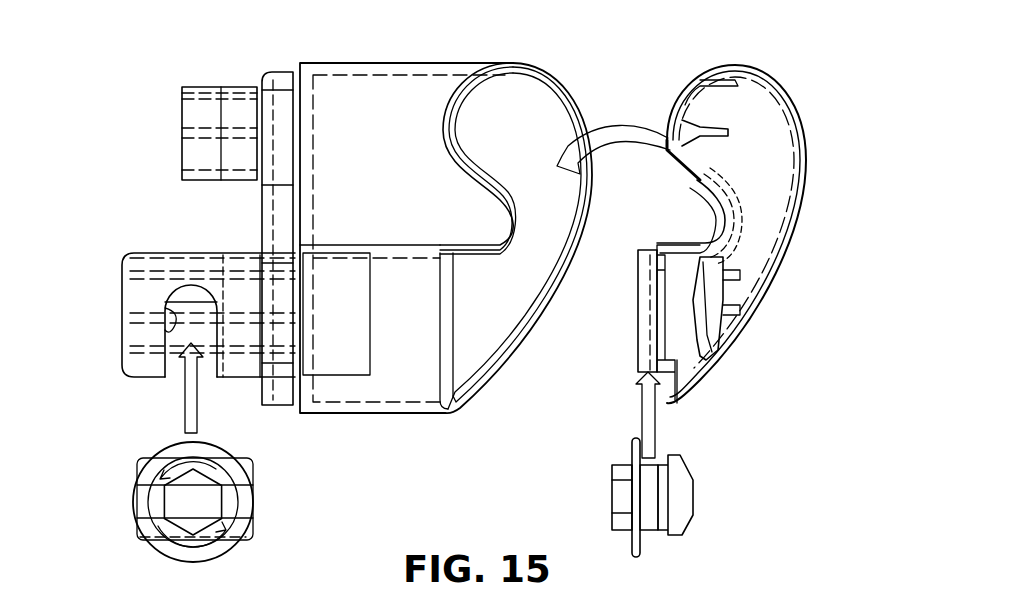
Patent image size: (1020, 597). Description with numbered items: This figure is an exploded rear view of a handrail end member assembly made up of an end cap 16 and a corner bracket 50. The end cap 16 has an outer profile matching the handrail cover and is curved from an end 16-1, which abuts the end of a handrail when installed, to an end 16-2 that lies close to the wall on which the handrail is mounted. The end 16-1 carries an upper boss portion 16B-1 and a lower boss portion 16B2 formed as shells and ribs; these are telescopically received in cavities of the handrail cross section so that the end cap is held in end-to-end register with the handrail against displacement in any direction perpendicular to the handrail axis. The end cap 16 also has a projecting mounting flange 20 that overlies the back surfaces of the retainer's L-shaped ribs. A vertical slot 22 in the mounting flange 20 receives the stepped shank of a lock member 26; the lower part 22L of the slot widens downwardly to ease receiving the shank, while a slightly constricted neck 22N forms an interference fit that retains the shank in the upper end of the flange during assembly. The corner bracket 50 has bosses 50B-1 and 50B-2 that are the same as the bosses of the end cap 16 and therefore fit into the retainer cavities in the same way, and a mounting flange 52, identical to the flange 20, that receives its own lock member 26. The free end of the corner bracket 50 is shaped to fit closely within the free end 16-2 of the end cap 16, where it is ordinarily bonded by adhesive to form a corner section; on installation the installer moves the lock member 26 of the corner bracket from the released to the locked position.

The end cap 16 is at (505, 56).
The end 16-1 is at (262, 221).
The end 16-2 is at (502, 385).
The upper boss portion 16B-1 is at (213, 87).
The lower boss portion 16B2 is at (212, 380).
The mounting flange 20 is at (124, 268).
The vertical slot 22 is at (165, 364).
The neck 22N is at (168, 308).
The lower part 22L is at (177, 372).
The lock member 26 is at (262, 510).
The corner bracket 50 is at (780, 80).
The boss 50B-1 is at (735, 95).
The boss 50B-2 is at (730, 300).
The mounting flange 52 is at (638, 345).